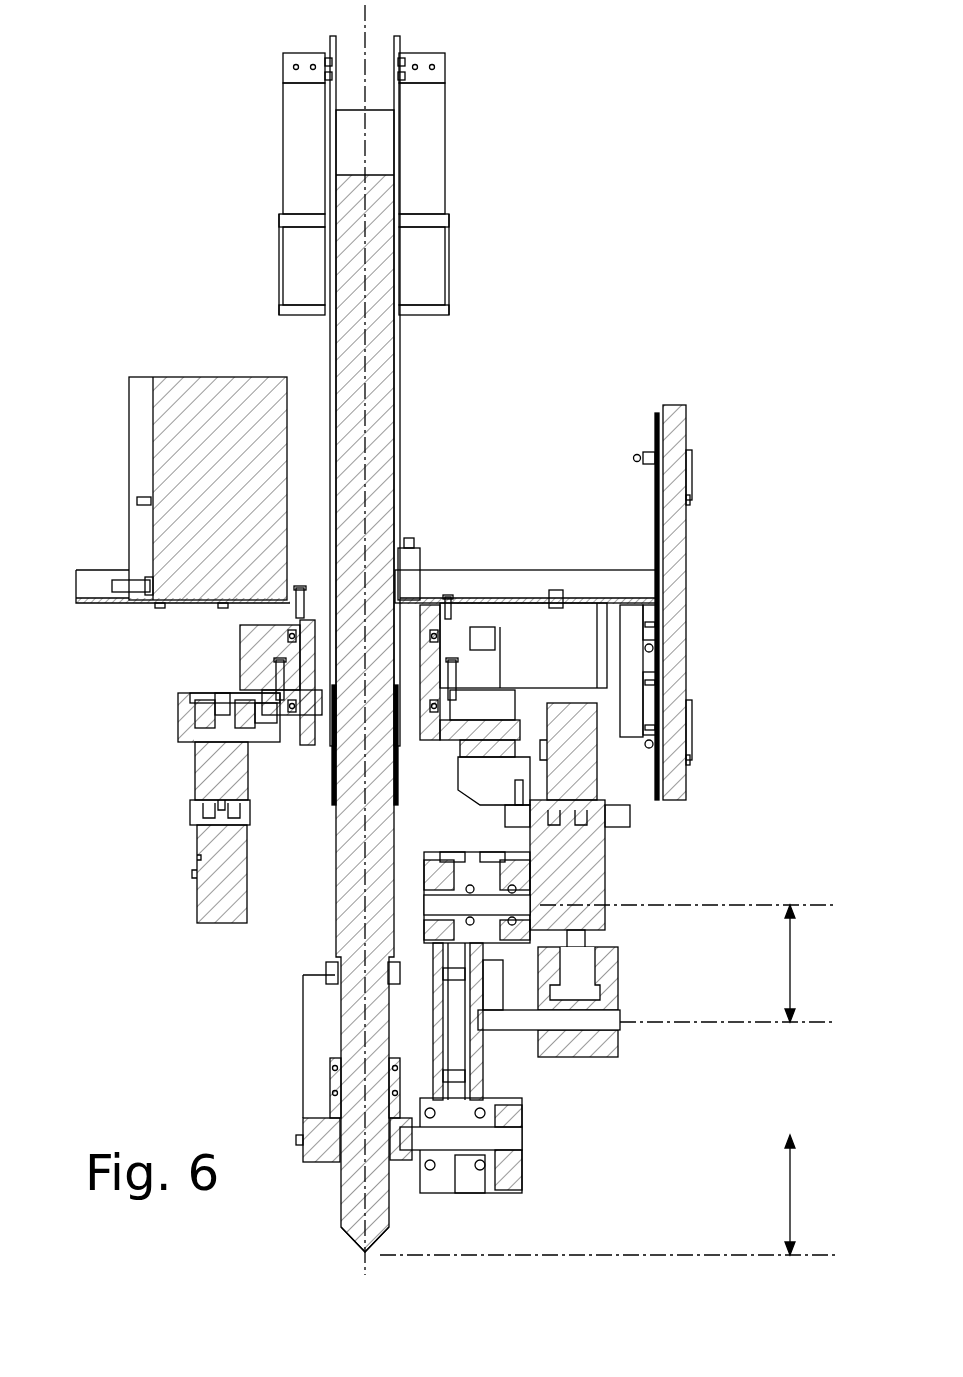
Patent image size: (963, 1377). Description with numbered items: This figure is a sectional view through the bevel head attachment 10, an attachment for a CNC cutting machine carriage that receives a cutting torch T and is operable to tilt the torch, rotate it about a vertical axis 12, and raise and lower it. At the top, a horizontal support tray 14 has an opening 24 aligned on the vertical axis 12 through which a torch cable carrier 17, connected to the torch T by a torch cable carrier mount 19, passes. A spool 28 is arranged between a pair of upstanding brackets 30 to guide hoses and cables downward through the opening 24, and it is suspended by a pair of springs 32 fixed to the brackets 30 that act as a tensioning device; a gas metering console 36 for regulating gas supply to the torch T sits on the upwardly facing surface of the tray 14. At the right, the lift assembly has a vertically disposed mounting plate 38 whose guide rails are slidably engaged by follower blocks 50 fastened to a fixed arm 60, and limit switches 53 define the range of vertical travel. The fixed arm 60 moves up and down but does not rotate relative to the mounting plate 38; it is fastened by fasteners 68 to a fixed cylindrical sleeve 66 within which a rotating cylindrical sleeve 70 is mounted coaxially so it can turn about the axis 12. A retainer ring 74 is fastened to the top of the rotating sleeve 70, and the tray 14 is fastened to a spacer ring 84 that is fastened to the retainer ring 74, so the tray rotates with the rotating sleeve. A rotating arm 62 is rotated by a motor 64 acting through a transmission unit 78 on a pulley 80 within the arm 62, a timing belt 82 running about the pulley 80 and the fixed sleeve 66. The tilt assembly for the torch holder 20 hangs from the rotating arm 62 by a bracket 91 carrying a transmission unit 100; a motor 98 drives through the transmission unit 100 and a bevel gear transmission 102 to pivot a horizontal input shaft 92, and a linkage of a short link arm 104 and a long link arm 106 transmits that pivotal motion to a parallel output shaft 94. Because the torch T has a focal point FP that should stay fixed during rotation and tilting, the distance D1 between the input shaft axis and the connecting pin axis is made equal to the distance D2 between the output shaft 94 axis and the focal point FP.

The bevel head attachment 10 is at (640, 112).
The vertical axis 12 is at (362, 38).
The horizontal support tray 14 is at (520, 598).
The torch cable carrier 17 is at (335, 925).
The torch cable carrier mount 19 is at (303, 1040).
The torch holder 20 is at (318, 1160).
The opening 24 is at (432, 598).
The spool 28 is at (450, 283).
The upstanding brackets 30 is at (332, 360).
The springs 32 is at (283, 145).
The gas metering console 36 is at (206, 378).
The mounting plate 38 is at (688, 560).
The follower blocks 50 is at (657, 617).
The limit switches 53 is at (640, 456).
The fixed arm 60 is at (240, 665).
The rotating arm 62 is at (178, 715).
The motor 64 is at (197, 903).
The fixed cylindrical sleeve 66 is at (262, 650).
The fasteners 68 is at (268, 690).
The rotating cylindrical sleeve 70 is at (412, 745).
The retainer ring 74 is at (300, 590).
The transmission unit 78 is at (195, 778).
The pulley 80 is at (198, 700).
The timing belt 82 is at (262, 725).
The spacer ring 84 is at (470, 605).
The bracket 91 is at (460, 790).
The input shaft 92 is at (560, 1022).
The output shaft 94 is at (522, 1140).
The motor 98 is at (598, 745).
The transmission unit 100 is at (610, 880).
The bevel gear transmission 102 is at (620, 960).
The short link arm 104 is at (500, 1070).
The long link arm 106 is at (440, 852).
The cutting torch T is at (335, 1205).
The focal point FP is at (365, 1255).
The distance D1 is at (789, 963).
The distance D2 is at (789, 1195).